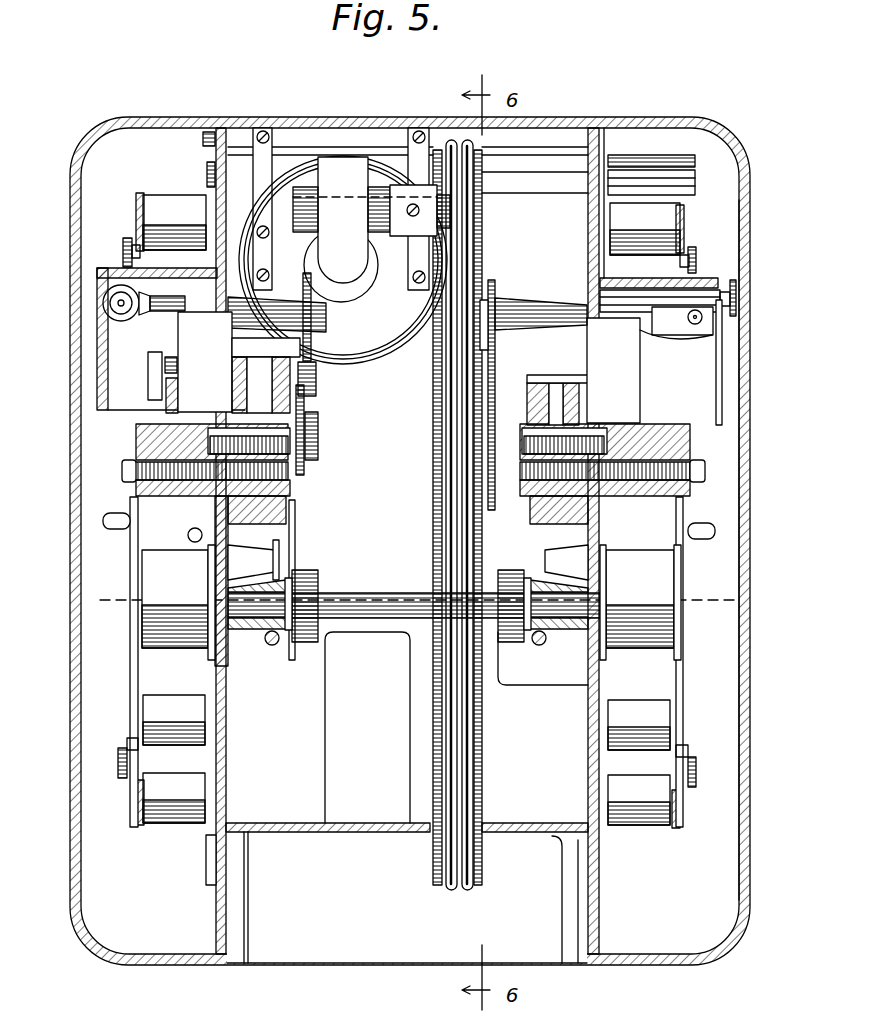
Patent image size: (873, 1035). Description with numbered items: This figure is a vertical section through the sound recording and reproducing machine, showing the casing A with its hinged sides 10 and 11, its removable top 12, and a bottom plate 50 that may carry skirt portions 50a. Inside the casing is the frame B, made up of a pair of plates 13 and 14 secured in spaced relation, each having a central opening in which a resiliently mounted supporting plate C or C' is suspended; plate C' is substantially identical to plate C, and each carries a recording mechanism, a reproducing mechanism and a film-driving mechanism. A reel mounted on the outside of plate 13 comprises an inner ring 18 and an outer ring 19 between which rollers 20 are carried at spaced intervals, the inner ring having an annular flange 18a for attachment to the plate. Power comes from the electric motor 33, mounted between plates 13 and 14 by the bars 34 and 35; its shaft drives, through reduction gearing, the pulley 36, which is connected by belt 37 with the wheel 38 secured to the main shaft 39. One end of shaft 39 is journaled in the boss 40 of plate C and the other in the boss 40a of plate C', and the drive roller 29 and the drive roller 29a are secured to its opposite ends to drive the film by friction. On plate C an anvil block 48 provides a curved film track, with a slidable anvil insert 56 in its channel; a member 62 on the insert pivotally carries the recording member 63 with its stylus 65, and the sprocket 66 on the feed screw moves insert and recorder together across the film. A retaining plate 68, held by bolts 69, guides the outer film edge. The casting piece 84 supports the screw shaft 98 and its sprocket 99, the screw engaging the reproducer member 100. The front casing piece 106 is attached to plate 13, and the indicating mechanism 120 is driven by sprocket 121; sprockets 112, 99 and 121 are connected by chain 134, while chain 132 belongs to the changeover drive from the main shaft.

The casing side 10 is at (70, 580).
The casing side 11 is at (748, 572).
The casing top 12 is at (372, 126).
The frame plate 13 is at (227, 725).
The frame plate 14 is at (215, 155).
The inner ring 18 is at (210, 192).
The annular flange 18a is at (212, 870).
The outer ring 19 is at (138, 200).
The rollers 20 is at (411, 510).
The drive roller 29 is at (160, 632).
The drive roller 29a is at (660, 635).
The electric motor 33 is at (343, 260).
The mounting bar 34 is at (270, 245).
The mounting bar 35 is at (296, 140).
The pulley 36 is at (485, 242).
The belt 37 is at (466, 392).
The wheel 38 is at (440, 508).
The main shaft 39 is at (350, 596).
The boss 40 is at (248, 636).
The boss 40a is at (565, 590).
The anvil block 48 is at (200, 500).
The bottom plate 50 is at (315, 832).
The skirt portions 50a is at (222, 912).
The anvil insert 56 is at (136, 436).
The member 62 is at (256, 388).
The recording member 63 is at (205, 362).
The stylus 65 is at (201, 422).
The sprocket 66 is at (318, 440).
The retaining plate 68 is at (124, 484).
The bolts 69 is at (128, 462).
The casting piece 84 is at (150, 392).
The screw shaft 98 is at (172, 357).
The sprocket 99 is at (317, 378).
The reproducer member 100 is at (244, 368).
The front casing piece 106 is at (105, 266).
The sprocket 112 is at (320, 505).
The indicating mechanism 120 is at (160, 330).
The sprocket 121 is at (300, 300).
The chain 132 is at (297, 528).
The chain 134 is at (310, 330).
The casing A is at (236, 126).
The frame B is at (227, 758).
The supporting plate C is at (257, 677).
The supporting plate C' is at (535, 696).